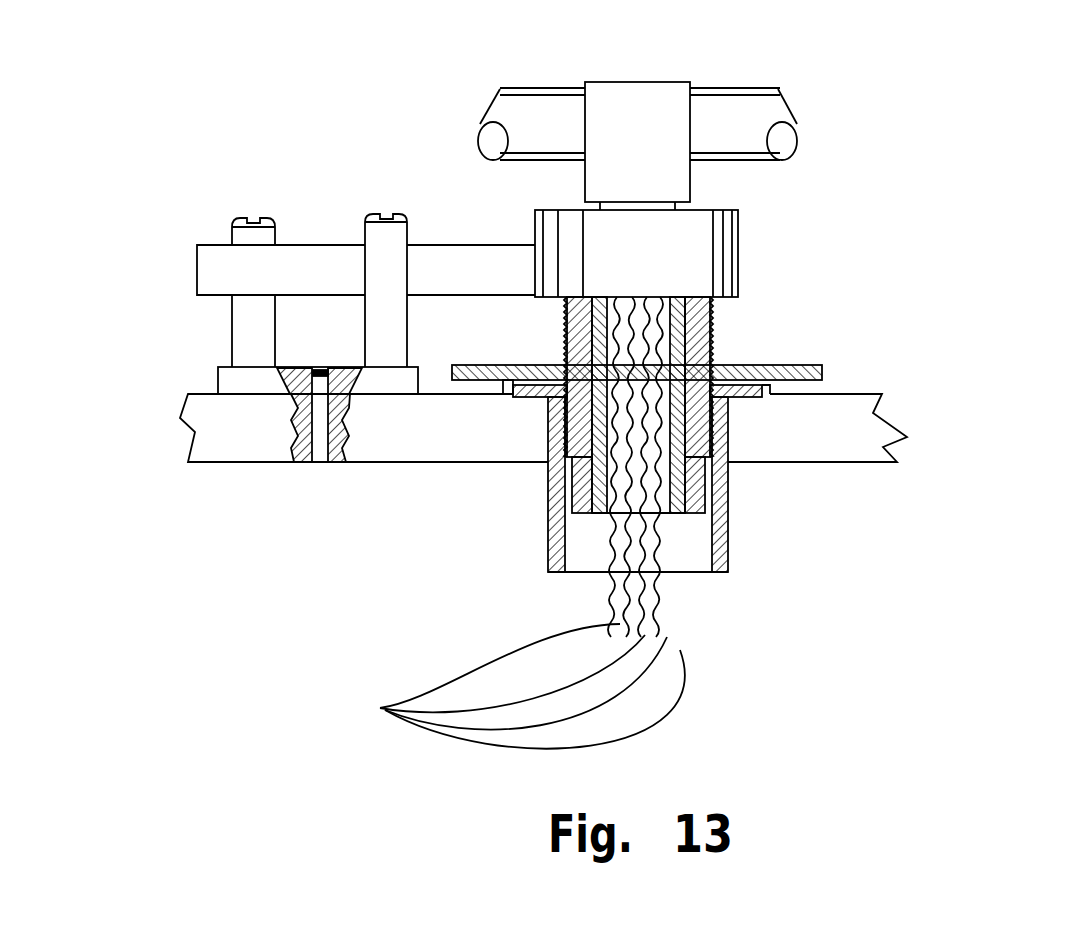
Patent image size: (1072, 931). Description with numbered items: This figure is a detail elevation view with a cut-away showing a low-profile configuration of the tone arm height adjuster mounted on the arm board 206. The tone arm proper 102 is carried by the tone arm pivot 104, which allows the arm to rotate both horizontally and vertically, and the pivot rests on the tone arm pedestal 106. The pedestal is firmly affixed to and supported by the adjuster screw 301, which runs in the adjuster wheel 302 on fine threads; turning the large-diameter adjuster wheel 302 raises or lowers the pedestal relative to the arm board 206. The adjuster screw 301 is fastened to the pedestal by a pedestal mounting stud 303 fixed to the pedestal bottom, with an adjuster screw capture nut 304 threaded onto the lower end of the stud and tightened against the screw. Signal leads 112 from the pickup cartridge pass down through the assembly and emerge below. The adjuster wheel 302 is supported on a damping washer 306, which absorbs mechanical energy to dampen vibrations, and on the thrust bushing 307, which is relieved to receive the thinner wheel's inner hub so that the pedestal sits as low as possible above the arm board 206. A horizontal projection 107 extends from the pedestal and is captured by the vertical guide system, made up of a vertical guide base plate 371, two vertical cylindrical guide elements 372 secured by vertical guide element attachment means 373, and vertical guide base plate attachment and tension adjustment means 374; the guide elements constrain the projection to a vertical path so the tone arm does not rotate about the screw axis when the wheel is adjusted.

The tone arm proper 102 is at (533, 108).
The tone arm pivot 104 is at (657, 96).
The tone arm pedestal 106 is at (718, 235).
The horizontal projection 107 is at (192, 260).
The signal leads 112 is at (385, 709).
The arm board 206 is at (832, 441).
The adjuster screw 301 is at (708, 348).
The adjuster wheel 302 is at (822, 373).
The pedestal mounting stud 303 is at (622, 513).
The adjuster screw capture nut 304 is at (692, 515).
The damping washer 306 is at (770, 394).
The thrust bushing 307 is at (732, 565).
The vertical guide base plate 371 is at (232, 380).
The vertical guide elements 372 is at (240, 327).
The vertical guide element attachment means 373 is at (378, 214).
The vertical guide base plate attachment and tension adjustment means 374 is at (300, 444).